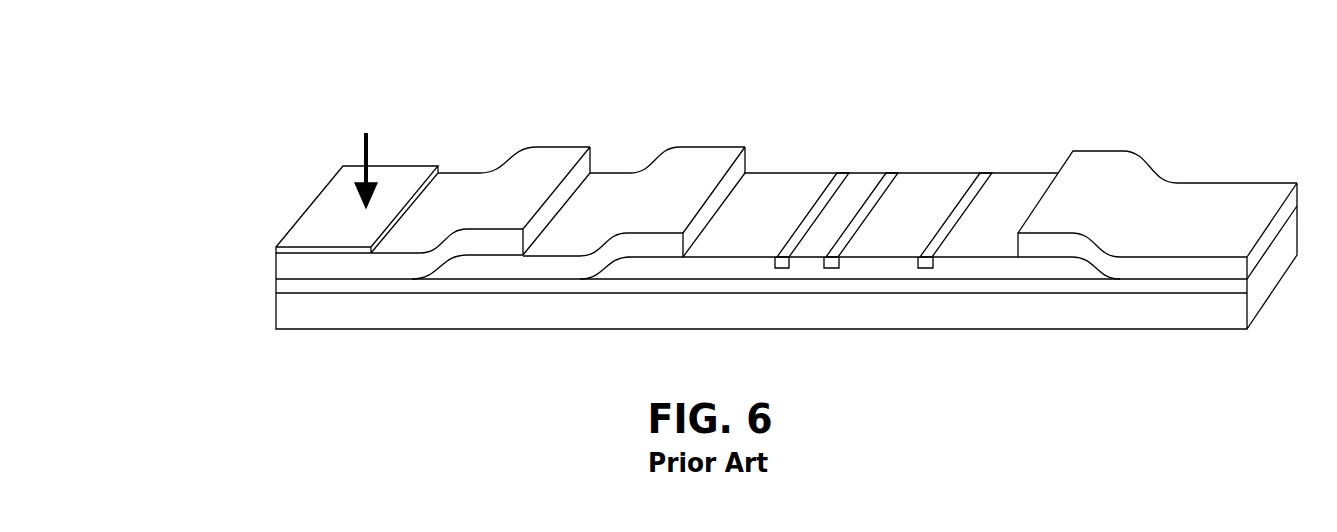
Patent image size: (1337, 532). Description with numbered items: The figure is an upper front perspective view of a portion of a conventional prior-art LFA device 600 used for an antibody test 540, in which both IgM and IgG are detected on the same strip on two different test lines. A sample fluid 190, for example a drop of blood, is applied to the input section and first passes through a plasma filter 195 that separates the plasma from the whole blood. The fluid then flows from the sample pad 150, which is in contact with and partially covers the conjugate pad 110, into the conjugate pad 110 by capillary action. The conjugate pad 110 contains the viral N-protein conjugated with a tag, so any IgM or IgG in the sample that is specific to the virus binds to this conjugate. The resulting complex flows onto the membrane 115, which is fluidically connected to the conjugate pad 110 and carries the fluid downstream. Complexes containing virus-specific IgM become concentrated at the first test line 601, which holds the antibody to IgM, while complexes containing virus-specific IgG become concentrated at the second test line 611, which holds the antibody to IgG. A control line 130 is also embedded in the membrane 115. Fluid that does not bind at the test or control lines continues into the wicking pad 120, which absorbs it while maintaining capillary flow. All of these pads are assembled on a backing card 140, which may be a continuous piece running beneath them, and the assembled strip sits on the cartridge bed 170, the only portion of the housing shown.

The LFA device 600 is at (229, 81).
The antibody test 540 is at (252, 209).
The sample fluid 190 is at (367, 146).
The plasma filter 195 is at (333, 196).
The sample pad 150 is at (467, 248).
The conjugate pad 110 is at (622, 248).
The first test line 601 is at (833, 187).
The second test line 611 is at (888, 180).
The control line 130 is at (930, 268).
The membrane 115 is at (863, 252).
The wicking pad 120 is at (1210, 208).
The backing card 140 is at (493, 287).
The cartridge bed 170 is at (330, 315).